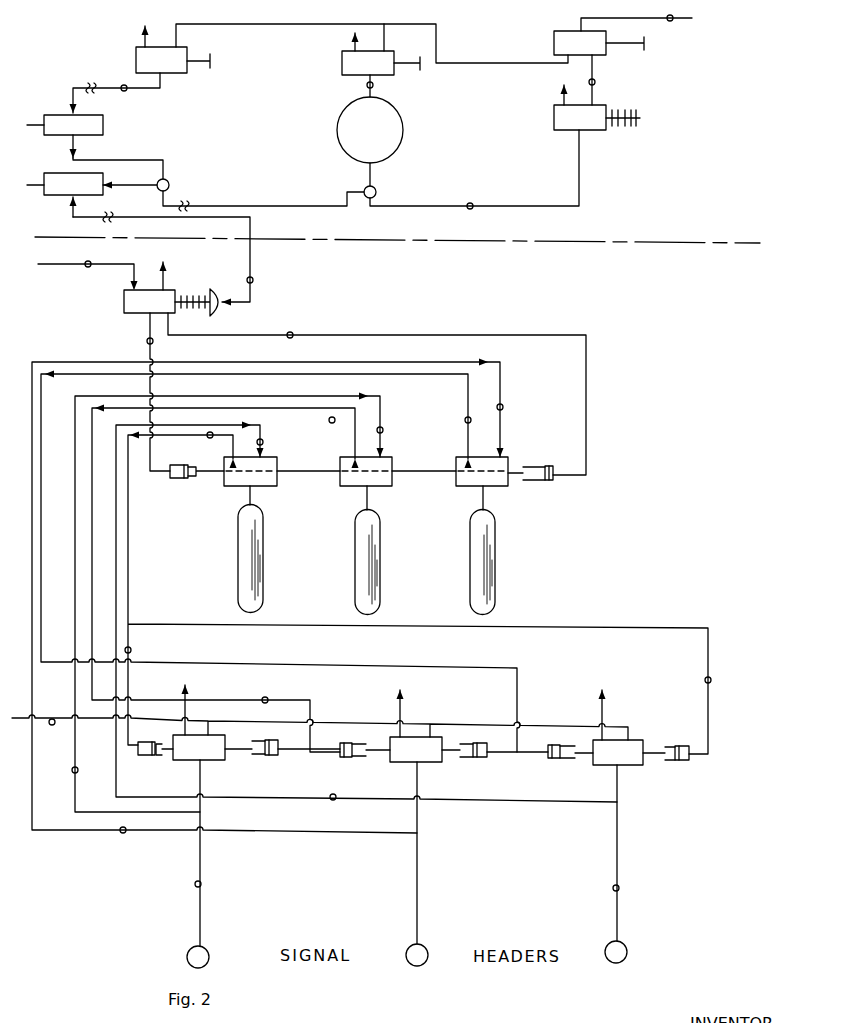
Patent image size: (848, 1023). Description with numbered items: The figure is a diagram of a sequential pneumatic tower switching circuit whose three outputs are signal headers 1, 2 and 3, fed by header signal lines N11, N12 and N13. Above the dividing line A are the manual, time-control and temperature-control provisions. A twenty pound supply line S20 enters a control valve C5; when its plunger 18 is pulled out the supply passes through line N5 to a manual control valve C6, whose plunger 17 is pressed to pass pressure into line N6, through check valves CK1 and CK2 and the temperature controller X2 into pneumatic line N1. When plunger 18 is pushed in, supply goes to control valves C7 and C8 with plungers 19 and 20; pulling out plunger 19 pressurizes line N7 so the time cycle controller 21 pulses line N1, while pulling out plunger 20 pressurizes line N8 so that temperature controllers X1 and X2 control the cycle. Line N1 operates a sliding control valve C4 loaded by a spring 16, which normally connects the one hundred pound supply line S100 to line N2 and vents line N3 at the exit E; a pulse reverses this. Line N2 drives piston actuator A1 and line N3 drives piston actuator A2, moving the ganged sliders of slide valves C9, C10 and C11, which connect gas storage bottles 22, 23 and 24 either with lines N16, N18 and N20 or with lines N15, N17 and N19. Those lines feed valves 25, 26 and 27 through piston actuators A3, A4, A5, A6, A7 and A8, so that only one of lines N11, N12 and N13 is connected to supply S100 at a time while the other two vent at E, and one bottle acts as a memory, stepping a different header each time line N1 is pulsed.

The control valve C8 is at (177, 57).
The plunger 20 is at (212, 67).
The pneumatic line N8 is at (127, 91).
The temperature controller X1 is at (62, 130).
The temperature controller X2 is at (62, 190).
The check valve CK1 is at (170, 184).
The control valve C7 is at (340, 62).
The plunger 19 is at (421, 71).
The pneumatic line N7 is at (367, 87).
The time cycle controller 21 is at (398, 138).
The check valve CK2 is at (375, 189).
The pneumatic line N6 is at (485, 196).
The control valve C5 is at (553, 36).
The pneumatic supply line S20 is at (670, 22).
The plunger 18 is at (648, 47).
The pneumatic line N5 is at (596, 83).
The manual control valve C6 is at (572, 130).
The plunger 17 is at (641, 120).
The exit E is at (610, 700).
The line A— A is at (397, 240).
The pneumatic supply line S100 is at (87, 268).
The sliding control valve C4 is at (128, 298).
The spring 16 is at (201, 292).
The pneumatic line N1 is at (253, 280).
The pneumatic line N2 is at (147, 341).
The pneumatic line N3 is at (289, 338).
The pneumatic line N15 is at (208, 438).
The pneumatic line N16 is at (263, 444).
The pneumatic line N17 is at (331, 418).
The pneumatic line N18 is at (384, 430).
The pneumatic line N19 is at (465, 422).
The pneumatic line N20 is at (504, 406).
The piston actuator A1 is at (177, 480).
The slide valve C9 is at (237, 488).
The slide valve C10 is at (352, 488).
The slide valve C11 is at (469, 488).
The piston actuator A2 is at (548, 483).
The gas storage bottle 22 is at (240, 558).
The gas storage bottle 23 is at (357, 560).
The gas storage bottle 24 is at (472, 558).
The piston actuator A3 is at (149, 757).
The piston actuator A4 is at (272, 757).
The piston actuator A5 is at (354, 758).
The piston actuator A6 is at (481, 759).
The piston actuator A7 is at (568, 760).
The piston actuator A8 is at (681, 745).
The valve 25 is at (210, 765).
The valve 26 is at (426, 767).
The valve 27 is at (625, 770).
The header signal line N11 is at (201, 882).
The header signal line N12 is at (442, 853).
The header signal line N13 is at (619, 886).
The signal header 1 is at (198, 957).
The signal header 2 is at (417, 955).
The signal header 3 is at (616, 952).